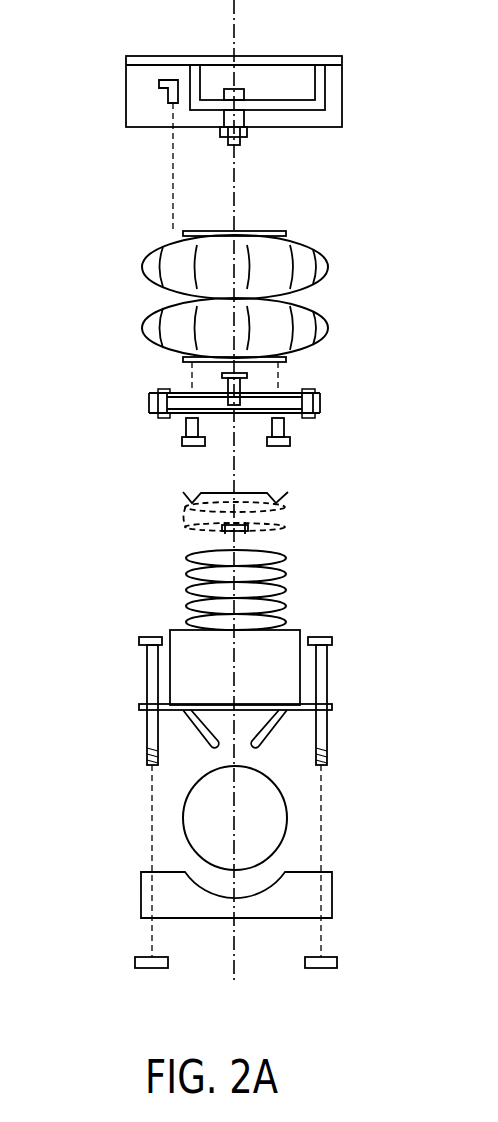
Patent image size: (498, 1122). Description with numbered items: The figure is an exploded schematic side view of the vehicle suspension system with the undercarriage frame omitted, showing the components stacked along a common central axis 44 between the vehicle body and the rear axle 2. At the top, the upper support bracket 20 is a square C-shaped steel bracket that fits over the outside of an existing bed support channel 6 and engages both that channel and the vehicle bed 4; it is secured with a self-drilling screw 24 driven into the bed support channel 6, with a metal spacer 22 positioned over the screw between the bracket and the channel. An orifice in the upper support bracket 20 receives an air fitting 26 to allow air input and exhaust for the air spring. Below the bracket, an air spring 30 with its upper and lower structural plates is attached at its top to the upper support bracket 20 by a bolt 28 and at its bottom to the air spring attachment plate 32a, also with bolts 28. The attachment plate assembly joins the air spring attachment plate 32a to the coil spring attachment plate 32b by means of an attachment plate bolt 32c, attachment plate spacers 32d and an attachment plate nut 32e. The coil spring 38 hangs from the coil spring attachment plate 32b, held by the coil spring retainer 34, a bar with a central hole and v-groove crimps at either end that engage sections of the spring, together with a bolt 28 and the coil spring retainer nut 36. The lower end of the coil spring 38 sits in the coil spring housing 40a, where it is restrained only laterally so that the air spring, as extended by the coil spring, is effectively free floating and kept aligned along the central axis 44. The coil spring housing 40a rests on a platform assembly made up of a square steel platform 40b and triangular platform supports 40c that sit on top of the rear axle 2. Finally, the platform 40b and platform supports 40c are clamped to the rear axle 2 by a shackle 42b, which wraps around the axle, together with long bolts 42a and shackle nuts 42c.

The rear axle 2 is at (254, 830).
The vehicle bed 4 is at (277, 57).
The bed support channel 6 is at (325, 90).
The upper support bracket 20 is at (343, 82).
The metal spacer 22 is at (248, 114).
The self-drilling screw 24 is at (248, 130).
The air fitting 26 is at (160, 88).
The bolt 28 is at (222, 135).
The air spring 30 is at (322, 252).
The air spring attachment plate 32a is at (300, 393).
The coil spring attachment plate 32b is at (318, 419).
The attachment plate bolt 32c is at (152, 395).
The attachment plate spacer 32d is at (150, 400).
The attachment plate nut 32e is at (150, 416).
The coil spring retainer 34 is at (185, 494).
The coil spring retainer nut 36 is at (215, 530).
The coil spring 38 is at (192, 588).
The coil spring housing 40a is at (220, 663).
The platform 40b is at (138, 705).
The platform support 40c is at (193, 743).
The long bolt 42a is at (325, 730).
The shackle 42b is at (333, 883).
The shackle nut 42c is at (338, 962).
The central axis 44 is at (230, 972).